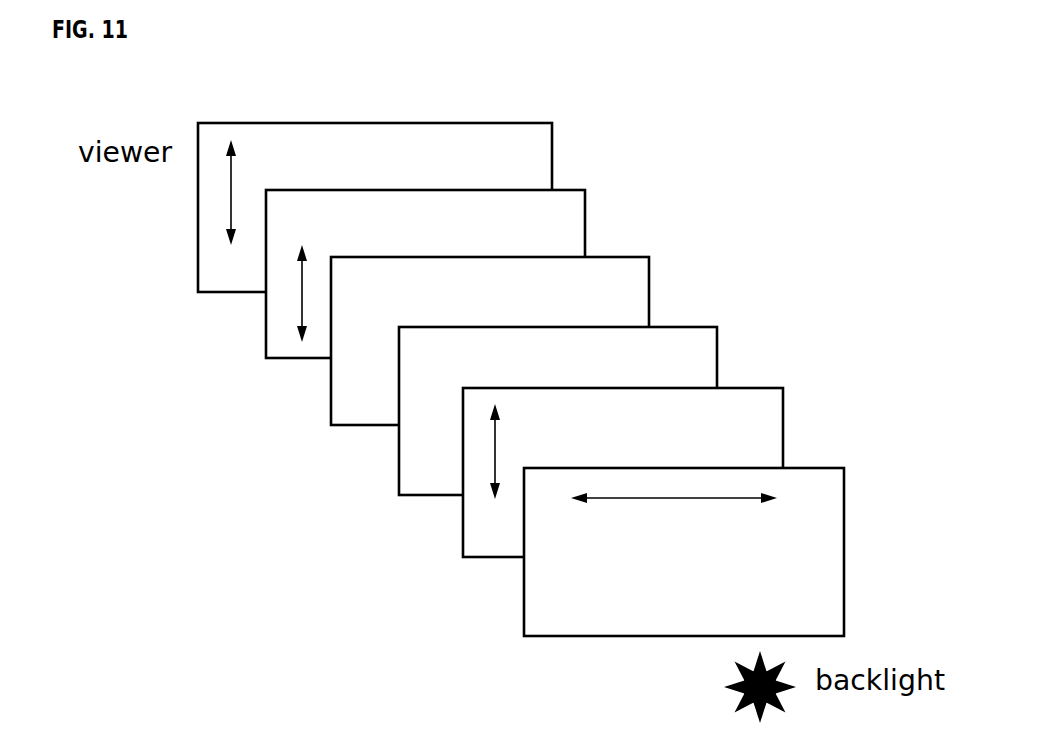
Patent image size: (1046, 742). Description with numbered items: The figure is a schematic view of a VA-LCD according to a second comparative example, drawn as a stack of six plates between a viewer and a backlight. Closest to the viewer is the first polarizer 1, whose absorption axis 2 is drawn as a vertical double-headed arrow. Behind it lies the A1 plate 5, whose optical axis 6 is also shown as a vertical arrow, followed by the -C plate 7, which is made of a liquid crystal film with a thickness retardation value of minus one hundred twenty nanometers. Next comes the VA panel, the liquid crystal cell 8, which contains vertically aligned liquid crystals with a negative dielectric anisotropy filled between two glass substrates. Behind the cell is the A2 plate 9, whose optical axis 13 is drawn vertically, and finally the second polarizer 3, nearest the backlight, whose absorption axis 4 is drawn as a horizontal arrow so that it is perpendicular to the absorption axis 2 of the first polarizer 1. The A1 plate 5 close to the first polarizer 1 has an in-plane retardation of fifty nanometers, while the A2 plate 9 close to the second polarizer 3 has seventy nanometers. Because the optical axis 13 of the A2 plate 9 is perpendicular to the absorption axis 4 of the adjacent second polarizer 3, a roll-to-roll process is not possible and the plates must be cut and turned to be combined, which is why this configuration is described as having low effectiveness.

The first polarizer 1 is at (375, 207).
The absorption axis of the first polarizer 2 is at (230, 214).
The second polarizer 3 is at (684, 552).
The absorption axis of the second polarizer 4 is at (698, 503).
The A1 plate 5 is at (425, 274).
The optical axis of the A1 plate 6 is at (301, 276).
The -C plate 7 is at (490, 341).
The liquid crystal cell 8 is at (558, 411).
The A2 plate 9 is at (623, 472).
The optical axis of the A2 plate 13 is at (494, 472).